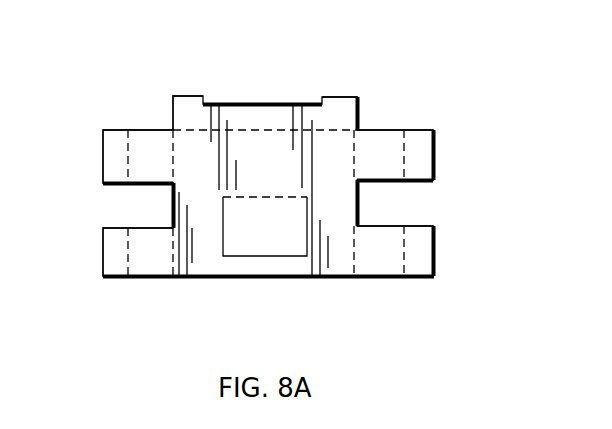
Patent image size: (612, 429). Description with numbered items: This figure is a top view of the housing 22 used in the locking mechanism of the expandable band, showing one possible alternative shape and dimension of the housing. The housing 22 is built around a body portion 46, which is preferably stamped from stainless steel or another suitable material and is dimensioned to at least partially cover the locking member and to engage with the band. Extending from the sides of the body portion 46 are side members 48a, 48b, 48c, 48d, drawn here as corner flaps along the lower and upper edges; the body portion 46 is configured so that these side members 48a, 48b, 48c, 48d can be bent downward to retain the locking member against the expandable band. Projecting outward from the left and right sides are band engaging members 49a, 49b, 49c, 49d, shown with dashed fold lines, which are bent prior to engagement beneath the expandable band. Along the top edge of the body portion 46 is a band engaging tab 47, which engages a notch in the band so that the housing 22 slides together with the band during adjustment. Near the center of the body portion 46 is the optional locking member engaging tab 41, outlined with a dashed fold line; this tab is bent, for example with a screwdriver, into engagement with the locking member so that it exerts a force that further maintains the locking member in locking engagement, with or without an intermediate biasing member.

The housing 22 is at (285, 36).
The band engaging tab 47 is at (256, 97).
The side member 48a is at (156, 286).
The side member 48b is at (382, 286).
The side member 48c is at (158, 121).
The side member 48d is at (388, 117).
The band engaging member 49a is at (110, 253).
The band engaging member 49b is at (420, 240).
The band engaging member 49c is at (110, 157).
The band engaging member 49d is at (420, 150).
The body portion 46 is at (190, 279).
The locking member engaging tab 41 is at (253, 242).